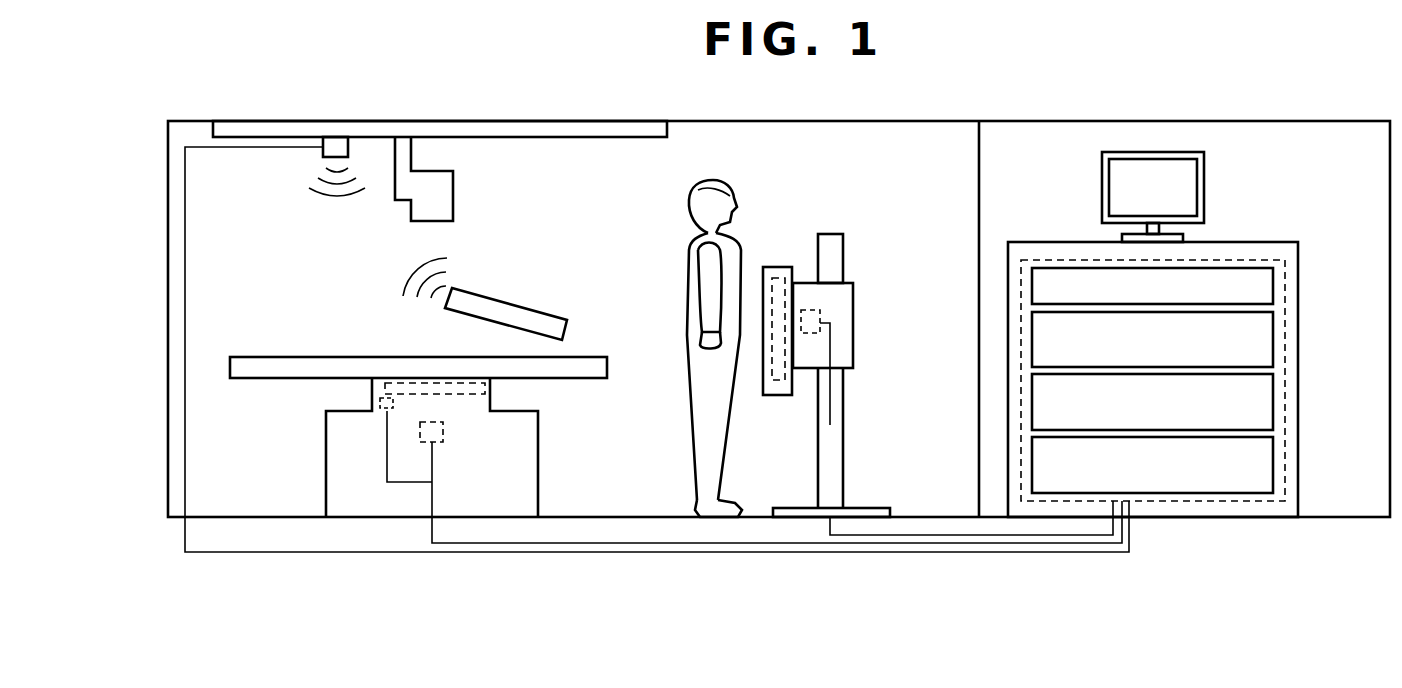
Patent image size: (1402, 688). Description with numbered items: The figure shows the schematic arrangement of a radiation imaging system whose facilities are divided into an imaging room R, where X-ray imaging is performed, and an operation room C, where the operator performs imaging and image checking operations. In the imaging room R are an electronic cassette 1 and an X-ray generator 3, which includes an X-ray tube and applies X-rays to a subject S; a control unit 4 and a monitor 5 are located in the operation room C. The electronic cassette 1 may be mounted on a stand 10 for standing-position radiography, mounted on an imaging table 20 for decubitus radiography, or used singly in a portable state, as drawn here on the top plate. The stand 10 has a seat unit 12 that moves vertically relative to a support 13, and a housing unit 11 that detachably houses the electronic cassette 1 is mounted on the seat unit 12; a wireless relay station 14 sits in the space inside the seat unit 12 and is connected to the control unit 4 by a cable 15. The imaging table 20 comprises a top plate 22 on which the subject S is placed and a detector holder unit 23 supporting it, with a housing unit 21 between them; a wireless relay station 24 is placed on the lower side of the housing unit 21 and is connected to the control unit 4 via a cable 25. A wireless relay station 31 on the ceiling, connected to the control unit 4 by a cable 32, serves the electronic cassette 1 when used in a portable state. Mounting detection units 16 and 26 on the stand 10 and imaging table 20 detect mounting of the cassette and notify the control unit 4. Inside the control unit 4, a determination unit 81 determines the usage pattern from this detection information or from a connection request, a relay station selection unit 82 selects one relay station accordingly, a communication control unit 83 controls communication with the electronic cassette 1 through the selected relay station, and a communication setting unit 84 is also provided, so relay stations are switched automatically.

The electronic cassette 1 is at (528, 313).
The X-ray generator 3 is at (438, 193).
The control unit 4 is at (1181, 356).
The monitor 5 is at (1190, 188).
The stand 10 is at (928, 384).
The housing unit 11 is at (777, 268).
The seat unit 12 is at (805, 287).
The support 13 is at (836, 243).
The wireless relay station 14 is at (820, 315).
The cable 15 is at (832, 425).
The mounting detection unit 16 is at (778, 395).
The imaging table 20 is at (674, 461).
The housing unit 21 is at (385, 395).
The top plate 22 is at (305, 370).
The detector holder unit 23 is at (340, 457).
The wireless relay station 24 is at (476, 470).
The cable 25 is at (430, 532).
The mounting detection unit 26 is at (383, 409).
The wireless relay station 31 is at (338, 142).
The cable 32 is at (203, 145).
The determination unit 81 is at (1273, 288).
The relay station selection unit 82 is at (1273, 343).
The communication control unit 83 is at (1273, 400).
The communication setting unit 84 is at (1273, 462).
The imaging room R is at (258, 245).
The operation room C is at (1217, 140).
The subject S is at (705, 463).